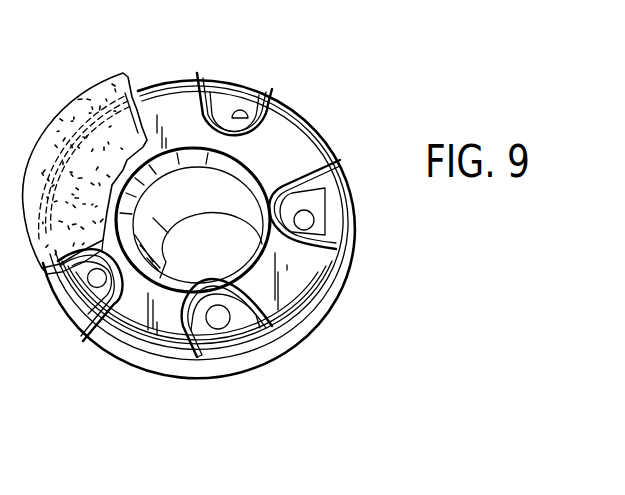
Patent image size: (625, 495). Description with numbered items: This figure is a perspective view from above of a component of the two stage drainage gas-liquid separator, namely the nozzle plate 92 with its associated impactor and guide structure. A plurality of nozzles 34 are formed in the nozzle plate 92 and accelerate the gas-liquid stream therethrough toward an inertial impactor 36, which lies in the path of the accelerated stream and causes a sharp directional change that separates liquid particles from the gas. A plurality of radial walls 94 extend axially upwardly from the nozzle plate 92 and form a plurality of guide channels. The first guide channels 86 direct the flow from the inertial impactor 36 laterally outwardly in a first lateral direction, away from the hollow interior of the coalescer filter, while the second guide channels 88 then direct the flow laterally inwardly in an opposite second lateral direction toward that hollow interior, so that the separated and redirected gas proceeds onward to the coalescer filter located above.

The nozzles 34 is at (240, 110).
The inertial impactor 36 is at (110, 82).
The first guide channels 86 is at (259, 82).
The second guide channels 88 is at (288, 153).
The nozzle plate 92 is at (283, 277).
The radial walls 94 is at (299, 243).